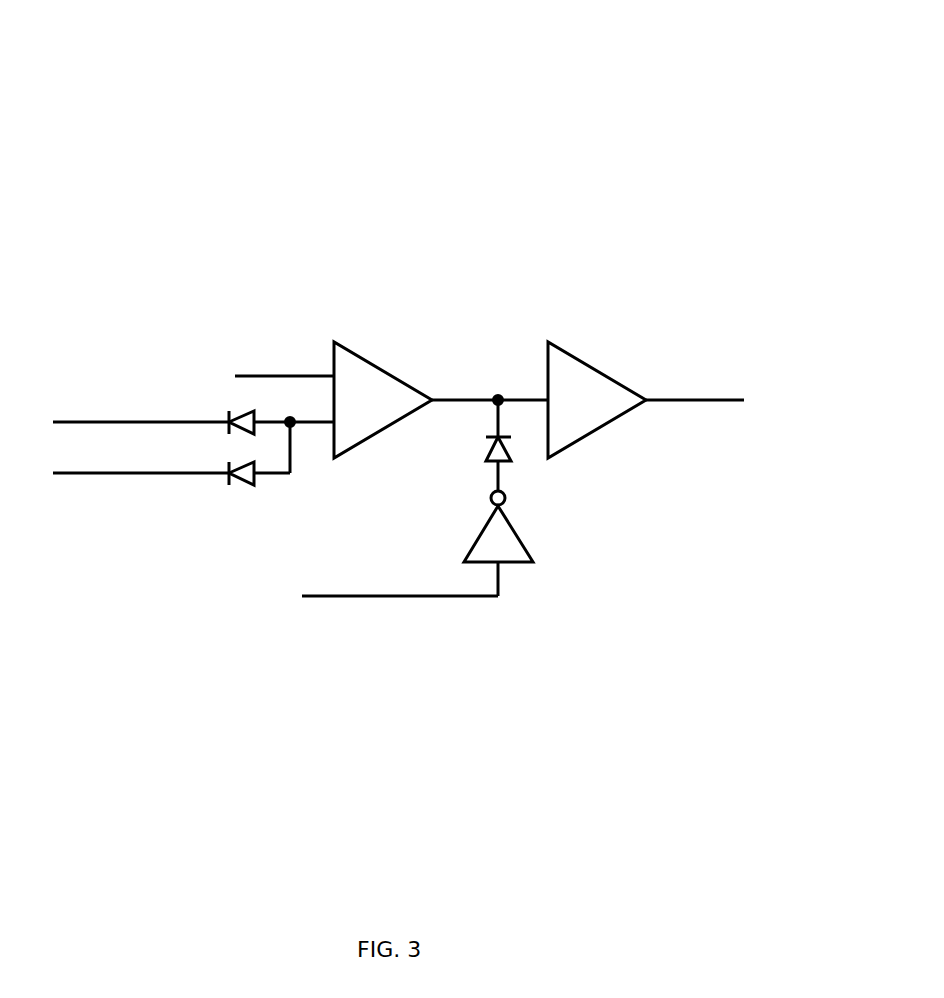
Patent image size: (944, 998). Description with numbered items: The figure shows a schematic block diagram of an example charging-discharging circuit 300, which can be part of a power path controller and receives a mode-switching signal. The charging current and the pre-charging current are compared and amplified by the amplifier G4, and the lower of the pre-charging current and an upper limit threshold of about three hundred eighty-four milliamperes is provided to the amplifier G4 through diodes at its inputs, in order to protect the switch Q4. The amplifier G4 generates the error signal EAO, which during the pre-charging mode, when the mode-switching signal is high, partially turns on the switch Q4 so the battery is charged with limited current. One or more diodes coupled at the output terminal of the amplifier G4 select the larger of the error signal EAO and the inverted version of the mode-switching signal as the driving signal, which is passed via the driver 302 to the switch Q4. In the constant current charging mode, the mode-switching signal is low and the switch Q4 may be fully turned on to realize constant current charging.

The charging-discharging circuit 300 is at (731, 71).
The driver 302 is at (597, 400).
The amplifier G4 is at (383, 400).
The error signal EAO is at (490, 413).
The switch Q4 is at (695, 417).